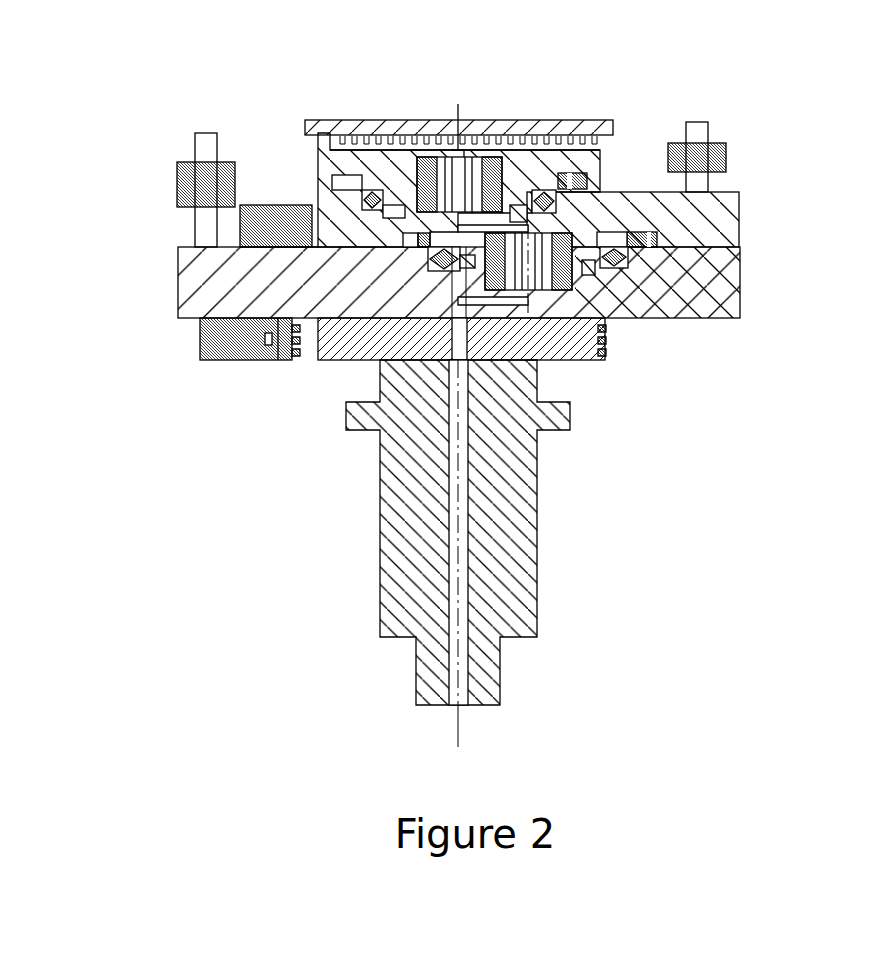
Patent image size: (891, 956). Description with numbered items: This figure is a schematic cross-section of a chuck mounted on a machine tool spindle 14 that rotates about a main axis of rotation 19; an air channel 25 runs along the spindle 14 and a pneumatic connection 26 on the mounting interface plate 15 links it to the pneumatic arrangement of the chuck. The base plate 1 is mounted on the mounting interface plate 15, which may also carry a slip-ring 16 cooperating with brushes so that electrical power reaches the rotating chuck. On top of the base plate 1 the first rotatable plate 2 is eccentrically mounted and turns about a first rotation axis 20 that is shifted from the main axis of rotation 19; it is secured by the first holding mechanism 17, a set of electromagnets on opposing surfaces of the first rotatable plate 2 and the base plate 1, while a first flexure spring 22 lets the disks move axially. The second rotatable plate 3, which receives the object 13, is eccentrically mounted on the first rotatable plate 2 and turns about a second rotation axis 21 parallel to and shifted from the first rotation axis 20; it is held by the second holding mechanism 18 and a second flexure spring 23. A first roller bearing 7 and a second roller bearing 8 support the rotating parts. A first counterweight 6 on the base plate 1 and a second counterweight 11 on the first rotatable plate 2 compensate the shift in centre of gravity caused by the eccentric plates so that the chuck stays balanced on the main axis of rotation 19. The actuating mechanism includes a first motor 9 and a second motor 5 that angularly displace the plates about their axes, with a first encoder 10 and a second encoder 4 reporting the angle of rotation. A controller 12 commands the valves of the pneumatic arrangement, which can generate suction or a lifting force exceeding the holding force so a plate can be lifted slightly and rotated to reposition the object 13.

The base plate 1 is at (213, 292).
The first rotatable plate 2 is at (717, 217).
The second rotatable plate 3 is at (332, 162).
The second encoder 4 is at (578, 178).
The second motor 5 is at (343, 125).
The first counterweight 6 is at (192, 177).
The first roller bearing 7 is at (590, 262).
The second roller bearing 8 is at (260, 228).
The first motor 9 is at (565, 272).
The first encoder 10 is at (642, 240).
The second counterweight 11 is at (707, 157).
The controller 12 is at (248, 237).
The object/work-piece 13 is at (587, 127).
The spindle 14 is at (508, 543).
The mounting interface plate 15 is at (555, 285).
The slip-ring 16 is at (280, 345).
The first holding mechanism 17 is at (445, 262).
The second holding mechanism 18 is at (545, 200).
The main rotating axis 19 is at (455, 719).
The first rotation axis 20 is at (588, 360).
The second rotation axis 21 is at (455, 115).
The first flexure spring 22 is at (614, 258).
The second flexure spring 23 is at (372, 189).
The air channel 25 is at (457, 606).
The pneumatic connection 26 is at (453, 339).